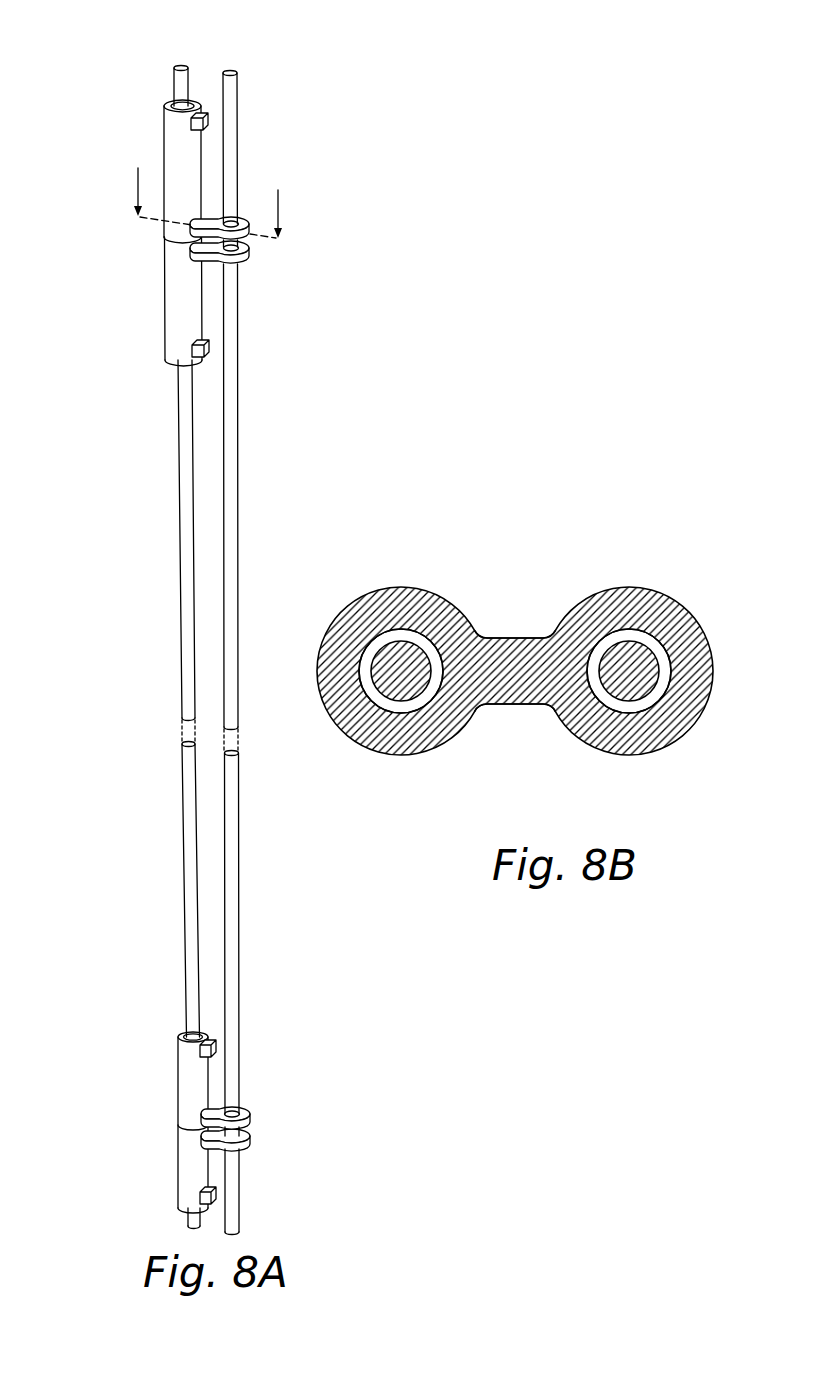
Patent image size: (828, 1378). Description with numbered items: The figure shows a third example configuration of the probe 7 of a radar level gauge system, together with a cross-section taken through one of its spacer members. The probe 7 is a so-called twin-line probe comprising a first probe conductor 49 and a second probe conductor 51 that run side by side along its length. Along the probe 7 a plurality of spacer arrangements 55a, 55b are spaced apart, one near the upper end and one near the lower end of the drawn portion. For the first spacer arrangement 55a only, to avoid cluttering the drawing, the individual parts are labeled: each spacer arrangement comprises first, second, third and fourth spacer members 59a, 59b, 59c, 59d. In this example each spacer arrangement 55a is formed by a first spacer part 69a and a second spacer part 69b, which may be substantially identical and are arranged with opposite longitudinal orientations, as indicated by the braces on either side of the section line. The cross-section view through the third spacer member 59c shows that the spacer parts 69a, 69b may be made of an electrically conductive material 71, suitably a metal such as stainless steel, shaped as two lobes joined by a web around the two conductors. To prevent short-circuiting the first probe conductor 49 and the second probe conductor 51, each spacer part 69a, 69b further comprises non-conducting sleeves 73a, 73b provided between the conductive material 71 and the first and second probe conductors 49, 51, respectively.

In FIG. 8A, the probe 7 is at (298, 77).
In FIG. 8A, the first probe conductor 49 is at (177, 83).
In FIG. 8B, the first probe conductor 49 is at (401, 665).
In FIG. 8A, the second probe conductor 51 is at (234, 73).
In FIG. 8B, the second probe conductor 51 is at (634, 665).
In FIG. 8A, the first spacer arrangement 55a is at (97, 241).
In FIG. 8A, the second spacer arrangement 55b is at (146, 1111).
In FIG. 8A, the first spacer member 59a is at (207, 122).
In FIG. 8A, the second spacer member 59b is at (209, 349).
In FIG. 8A, the third spacer member 59c is at (220, 190).
In FIG. 8B, the third spacer member 59c is at (508, 610).
In FIG. 8A, the fourth spacer member 59d is at (221, 278).
In FIG. 8A, the first spacer part 69a is at (127, 100).
In FIG. 8A, the second spacer part 69b is at (127, 233).
In FIG. 8B, the electrically conductive material 71 is at (543, 688).
In FIG. 8B, the non-conducting sleeve 73a is at (390, 706).
In FIG. 8B, the non-conducting sleeve 73b is at (642, 704).